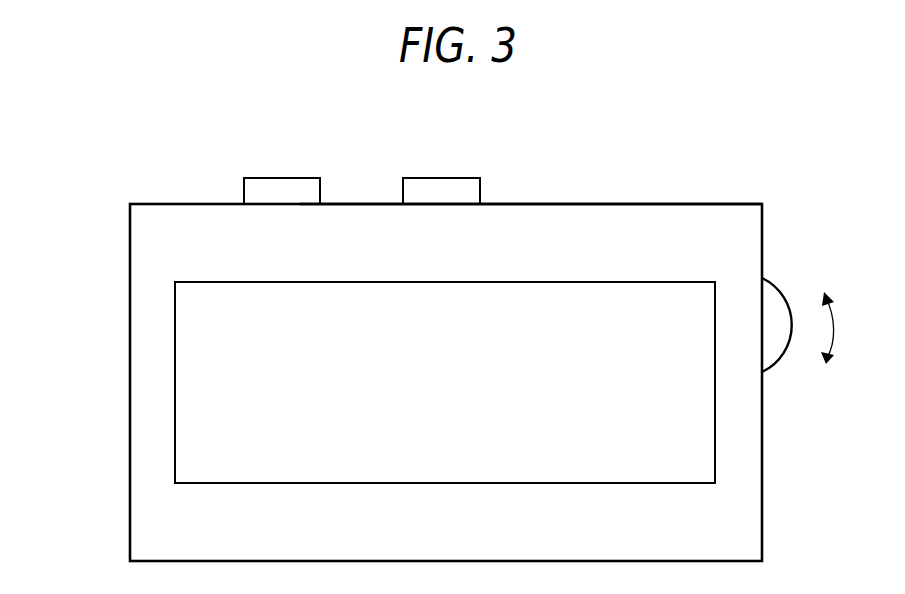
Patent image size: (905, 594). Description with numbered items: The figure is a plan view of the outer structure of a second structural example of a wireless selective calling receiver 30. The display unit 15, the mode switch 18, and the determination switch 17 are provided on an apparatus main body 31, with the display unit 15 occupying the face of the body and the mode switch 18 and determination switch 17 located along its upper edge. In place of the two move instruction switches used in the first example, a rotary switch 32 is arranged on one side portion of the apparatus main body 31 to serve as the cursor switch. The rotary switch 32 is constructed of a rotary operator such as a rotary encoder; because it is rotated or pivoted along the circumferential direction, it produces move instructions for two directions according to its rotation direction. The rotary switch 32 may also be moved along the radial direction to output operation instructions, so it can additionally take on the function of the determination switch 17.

The wireless selective calling receiver 30 is at (641, 174).
The apparatus main body 31 is at (703, 227).
The display unit 15 is at (175, 383).
The mode switch 18 is at (281, 178).
The determination switch 17 is at (440, 178).
The rotary switch 32 is at (770, 287).